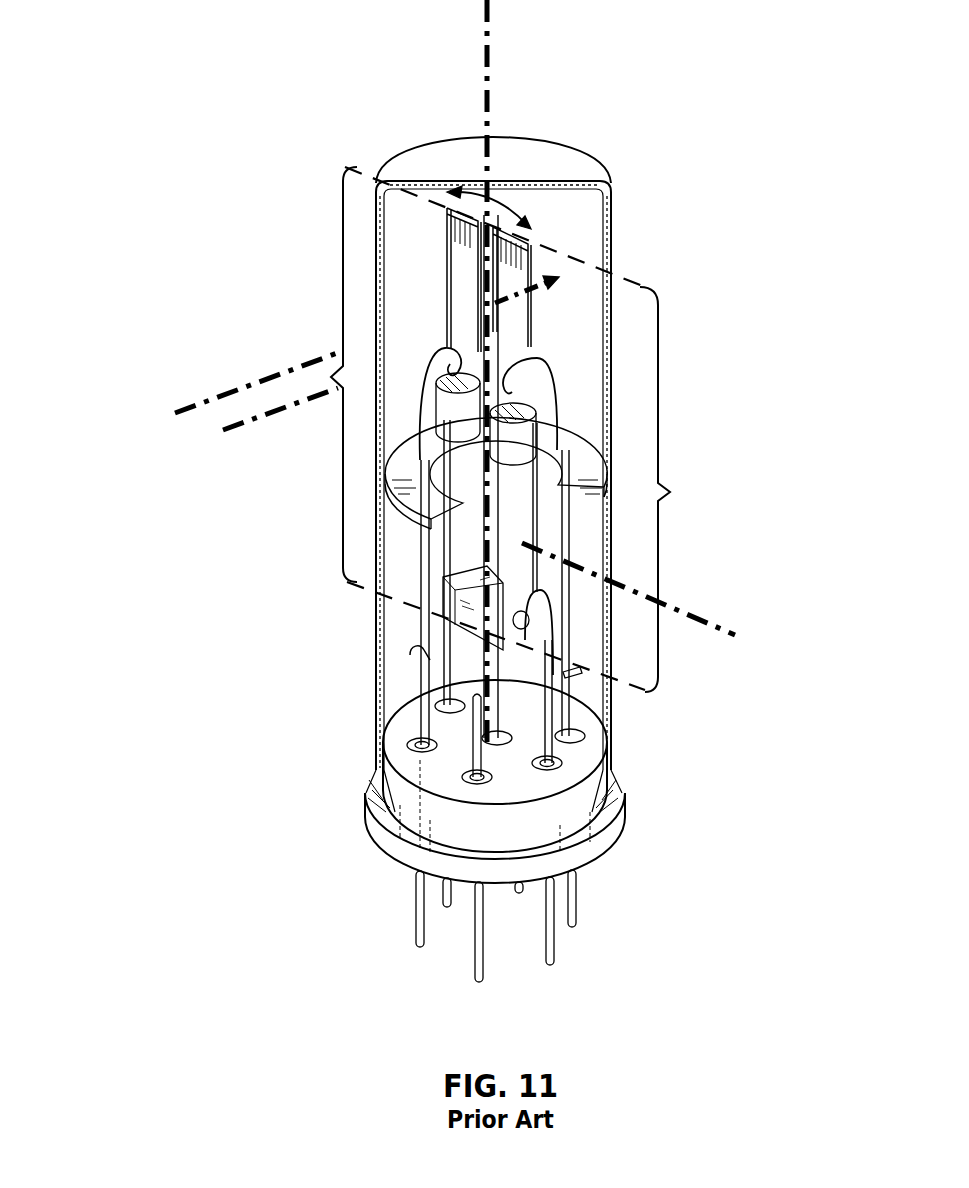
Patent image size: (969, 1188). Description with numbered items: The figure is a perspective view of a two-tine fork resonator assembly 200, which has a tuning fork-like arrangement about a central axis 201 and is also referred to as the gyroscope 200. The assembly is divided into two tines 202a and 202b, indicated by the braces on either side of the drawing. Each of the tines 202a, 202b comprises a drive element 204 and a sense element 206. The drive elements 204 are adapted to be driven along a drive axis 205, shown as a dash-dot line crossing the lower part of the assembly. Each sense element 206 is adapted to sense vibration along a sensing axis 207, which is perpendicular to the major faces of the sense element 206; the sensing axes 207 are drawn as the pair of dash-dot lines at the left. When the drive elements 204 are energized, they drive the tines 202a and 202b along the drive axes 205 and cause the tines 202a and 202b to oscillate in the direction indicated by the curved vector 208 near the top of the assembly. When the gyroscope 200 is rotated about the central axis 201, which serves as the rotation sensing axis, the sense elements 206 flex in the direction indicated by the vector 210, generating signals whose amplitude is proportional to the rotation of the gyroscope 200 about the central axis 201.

The 2-tine fork resonator assembly 200 is at (204, 153).
The central axis 201 is at (480, 100).
The tine 202a is at (328, 370).
The tine 202b is at (672, 492).
The drive element 204 is at (518, 530).
The drive axis 205 is at (733, 623).
The sense element 206 is at (487, 264).
The sensing axis 207 is at (231, 427).
The vector 208 is at (494, 200).
The vector 210 is at (540, 283).